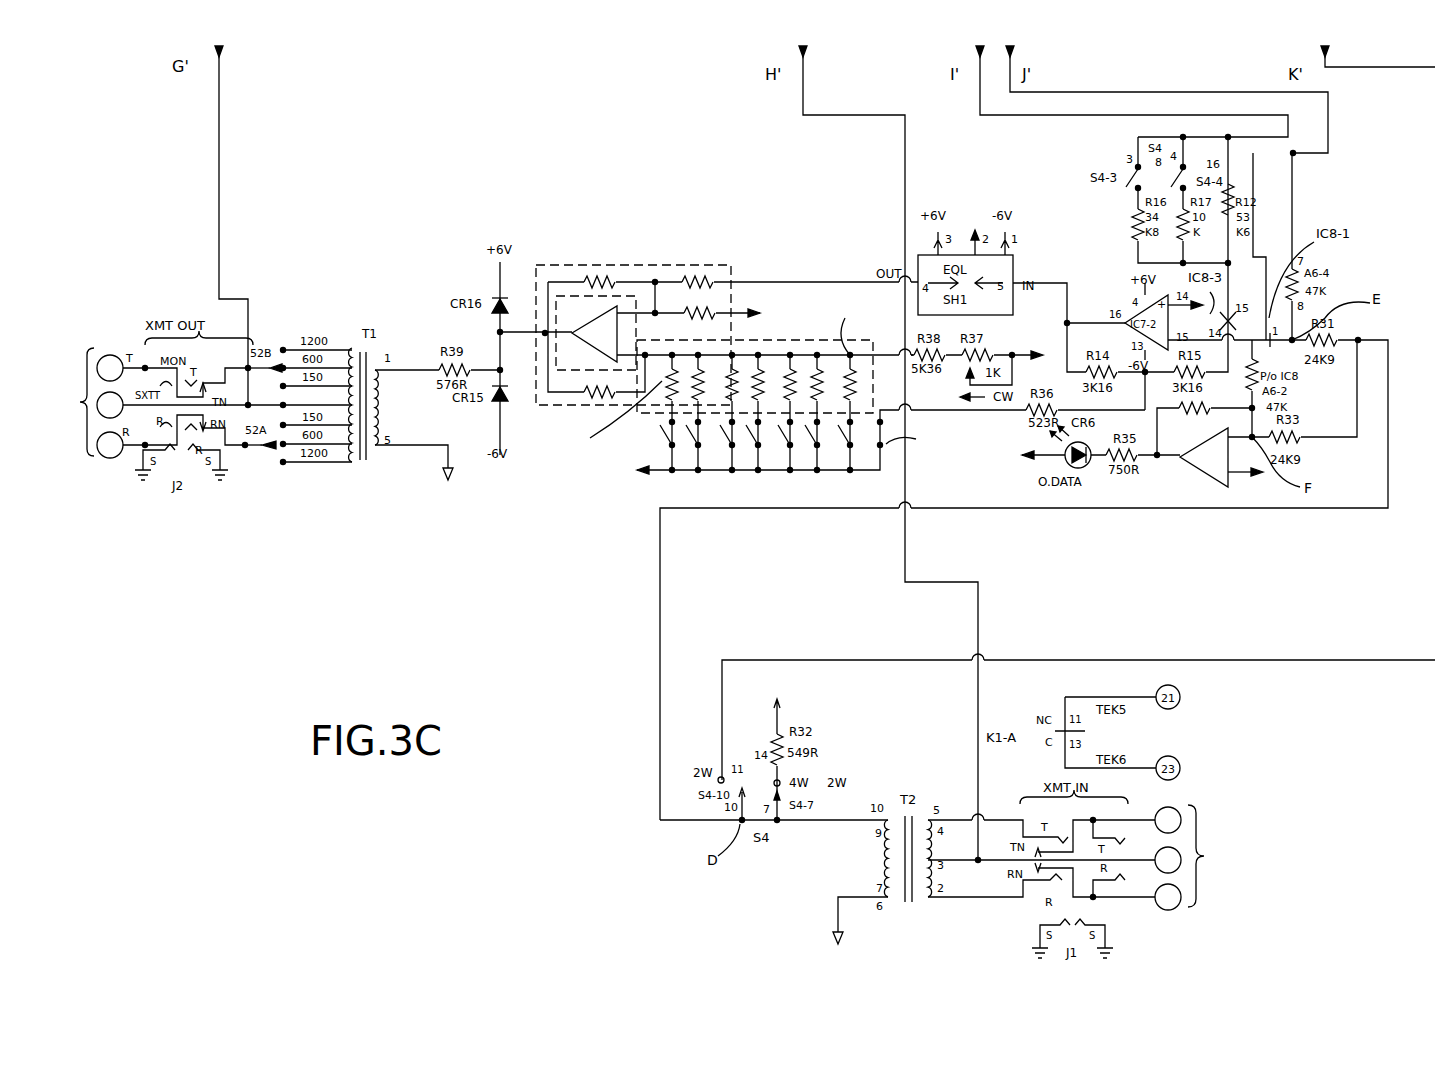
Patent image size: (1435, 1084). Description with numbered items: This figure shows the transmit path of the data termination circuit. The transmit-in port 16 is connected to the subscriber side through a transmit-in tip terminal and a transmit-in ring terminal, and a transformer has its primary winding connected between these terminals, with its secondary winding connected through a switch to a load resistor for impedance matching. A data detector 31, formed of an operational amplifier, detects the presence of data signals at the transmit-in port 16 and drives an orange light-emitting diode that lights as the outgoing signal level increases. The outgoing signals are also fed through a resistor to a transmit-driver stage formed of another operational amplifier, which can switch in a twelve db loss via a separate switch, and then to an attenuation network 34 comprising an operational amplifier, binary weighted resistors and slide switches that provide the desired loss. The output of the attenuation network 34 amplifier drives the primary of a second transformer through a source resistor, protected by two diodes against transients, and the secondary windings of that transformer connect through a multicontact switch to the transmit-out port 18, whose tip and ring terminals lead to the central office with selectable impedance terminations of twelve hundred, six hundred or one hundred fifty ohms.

The transmit-out port 18 is at (101, 338).
The attenuation network 34 is at (658, 262).
The data detector 31 is at (1188, 473).
The transmit-in port 16 is at (1222, 826).